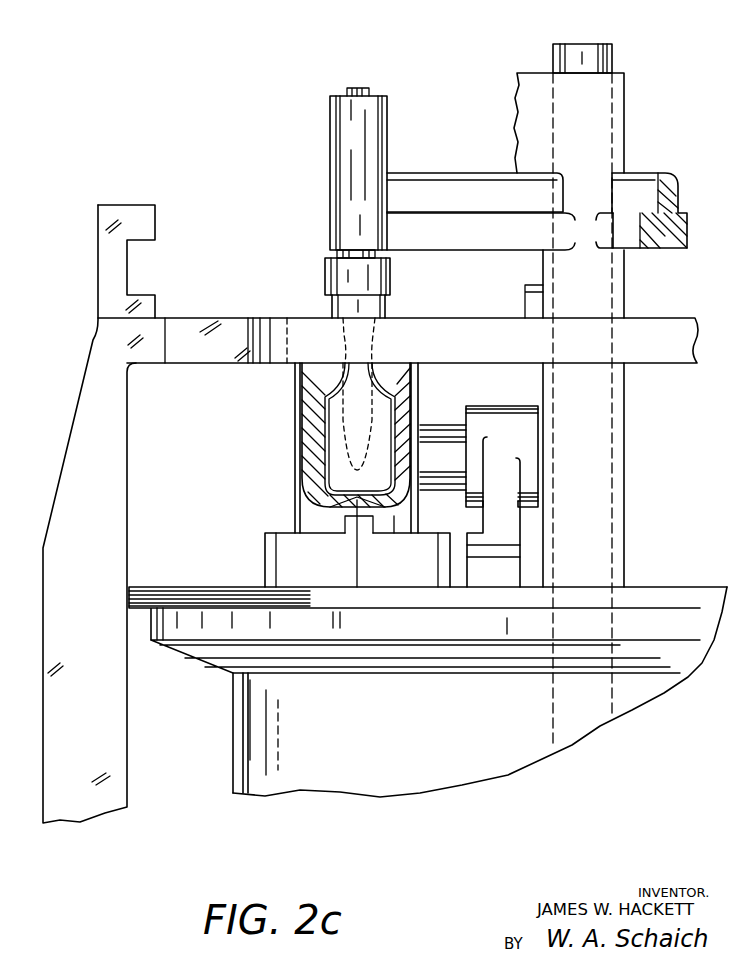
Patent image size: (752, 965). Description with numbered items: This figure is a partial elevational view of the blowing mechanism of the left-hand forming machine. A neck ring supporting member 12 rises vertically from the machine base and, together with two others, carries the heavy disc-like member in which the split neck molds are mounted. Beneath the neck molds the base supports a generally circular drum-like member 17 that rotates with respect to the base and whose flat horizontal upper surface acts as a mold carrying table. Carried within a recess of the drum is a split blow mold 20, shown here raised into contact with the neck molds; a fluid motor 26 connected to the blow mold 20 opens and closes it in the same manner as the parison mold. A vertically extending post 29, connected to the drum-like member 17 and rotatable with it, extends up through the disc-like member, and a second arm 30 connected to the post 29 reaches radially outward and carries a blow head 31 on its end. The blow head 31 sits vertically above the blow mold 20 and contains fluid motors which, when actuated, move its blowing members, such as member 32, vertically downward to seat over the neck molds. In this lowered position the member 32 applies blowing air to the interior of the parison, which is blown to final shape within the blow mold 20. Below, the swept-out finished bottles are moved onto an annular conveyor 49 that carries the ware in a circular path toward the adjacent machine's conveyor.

The neck ring supporting member 12 is at (98, 570).
The drum-like member 17 is at (243, 745).
The split blow mold 20 is at (313, 415).
The fluid motor 26 is at (495, 416).
The post 29 is at (578, 63).
The second arm 30 is at (436, 192).
The blow head 31 is at (363, 125).
The blow head member 32 is at (368, 310).
The annular conveyor 49 is at (150, 590).